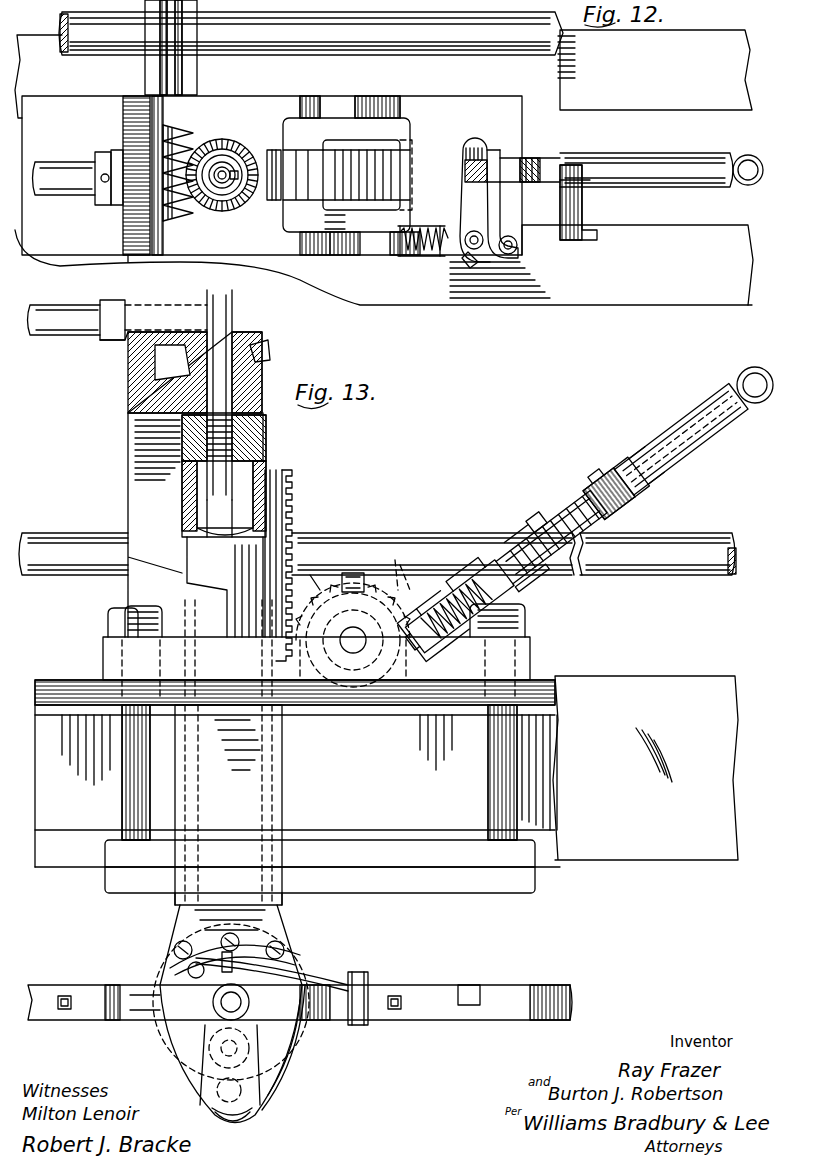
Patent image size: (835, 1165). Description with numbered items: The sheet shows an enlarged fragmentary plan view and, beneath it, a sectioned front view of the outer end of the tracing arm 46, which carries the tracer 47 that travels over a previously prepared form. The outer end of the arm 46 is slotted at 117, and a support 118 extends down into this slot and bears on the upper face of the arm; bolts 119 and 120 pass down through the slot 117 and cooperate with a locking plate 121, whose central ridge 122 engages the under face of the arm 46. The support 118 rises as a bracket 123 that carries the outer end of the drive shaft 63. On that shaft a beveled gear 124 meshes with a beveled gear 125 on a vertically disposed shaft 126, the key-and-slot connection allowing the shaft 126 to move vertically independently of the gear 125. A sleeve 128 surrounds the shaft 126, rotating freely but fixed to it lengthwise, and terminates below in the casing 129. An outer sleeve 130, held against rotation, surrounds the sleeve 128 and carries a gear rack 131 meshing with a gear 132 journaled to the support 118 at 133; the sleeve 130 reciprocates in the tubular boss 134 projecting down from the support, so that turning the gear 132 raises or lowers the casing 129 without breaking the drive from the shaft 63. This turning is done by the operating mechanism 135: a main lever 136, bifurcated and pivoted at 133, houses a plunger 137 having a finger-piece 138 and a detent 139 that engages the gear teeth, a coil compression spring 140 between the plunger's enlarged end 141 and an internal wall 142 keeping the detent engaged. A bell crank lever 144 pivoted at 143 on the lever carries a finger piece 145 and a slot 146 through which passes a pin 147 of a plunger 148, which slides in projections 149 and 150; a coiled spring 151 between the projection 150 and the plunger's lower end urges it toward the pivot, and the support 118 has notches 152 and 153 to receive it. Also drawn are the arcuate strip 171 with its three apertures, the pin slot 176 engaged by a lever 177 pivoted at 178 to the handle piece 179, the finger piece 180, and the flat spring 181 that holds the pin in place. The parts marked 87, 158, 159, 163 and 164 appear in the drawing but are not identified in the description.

In FIG. 12, the arm 46 is at (384, 277).
In FIG. 13, the arm 46 is at (650, 676).
In FIG. 13, the tracer 47 is at (293, 1071).
In FIG. 12, the shaft 63 is at (60, 192).
In FIG. 13, the shaft 63 is at (40, 333).
In FIG. 12, the horizontal shaft 87 is at (62, 20).
In FIG. 13, the horizontal shaft 87 is at (60, 576).
In FIG. 12, the slot 117 is at (676, 110).
In FIG. 13, the slot 117 is at (563, 682).
In FIG. 12, the support 118 is at (418, 96).
In FIG. 13, the support 118 is at (530, 645).
In FIG. 13, the bolt 119 is at (122, 795).
In FIG. 13, the bolt 120 is at (517, 800).
In FIG. 13, the locking plate 121 is at (402, 870).
In FIG. 13, the central ridge 122 is at (372, 860).
In FIG. 12, the bracket 123 is at (128, 245).
In FIG. 13, the bracket 123 is at (128, 426).
In FIG. 12, the beveled gear 124 is at (170, 140).
In FIG. 13, the beveled gear 124 is at (165, 352).
In FIG. 12, the beveled gear 125 is at (232, 150).
In FIG. 13, the beveled gear 125 is at (262, 352).
In FIG. 12, the vertically disposed shaft 126 is at (224, 170).
In FIG. 13, the vertically disposed shaft 126 is at (232, 478).
In FIG. 13, the sleeve 128 is at (182, 497).
In FIG. 13, the casing 129 is at (280, 920).
In FIG. 13, the sleeve 130 is at (284, 532).
In FIG. 12, the gear rack 131 is at (272, 150).
In FIG. 13, the gear rack 131 is at (312, 578).
In FIG. 12, the gear 132 is at (312, 158).
In FIG. 13, the gear 132 is at (356, 573).
In FIG. 12, the journal 133 is at (335, 220).
In FIG. 13, the journal 133 is at (350, 652).
In FIG. 13, the tubular boss 134 is at (283, 792).
In FIG. 12, the operating mechanism 135 is at (614, 195).
In FIG. 13, the operating mechanism 135 is at (599, 450).
In FIG. 12, the main lever 136 is at (645, 153).
In FIG. 13, the main lever 136 is at (682, 458).
In FIG. 13, the plunger 137 is at (632, 477).
In FIG. 12, the finger-piece 138 is at (747, 155).
In FIG. 13, the finger-piece 138 is at (752, 368).
In FIG. 13, the detent 139 is at (410, 569).
In FIG. 13, the coil compression spring 140 is at (618, 517).
In FIG. 13, the enlarged end 141 is at (420, 556).
In FIG. 13, the wall 142 is at (565, 469).
In FIG. 12, the pivot 143 is at (492, 118).
In FIG. 12, the bell crank lever 144 is at (490, 172).
In FIG. 13, the bell crank lever 144 is at (497, 514).
In FIG. 12, the finger piece 145 is at (590, 238).
In FIG. 13, the finger piece 145 is at (623, 490).
In FIG. 12, the slot 146 is at (482, 236).
In FIG. 12, the pin 147 is at (468, 258).
In FIG. 13, the pin 147 is at (478, 527).
In FIG. 12, the plunger 148 is at (515, 252).
In FIG. 13, the plunger 148 is at (492, 578).
In FIG. 12, the projection 149 is at (400, 258).
In FIG. 13, the projection 149 is at (428, 612).
In FIG. 12, the projection 150 is at (442, 226).
In FIG. 13, the projection 150 is at (502, 592).
In FIG. 12, the coiled spring 151 is at (430, 258).
In FIG. 13, the coiled spring 151 is at (443, 600).
In FIG. 13, the notch 152 is at (410, 652).
In FIG. 12, the notch 153 is at (345, 255).
In FIG. 13, the notch 153 is at (402, 545).
In FIG. 13, the bar 158 is at (150, 1022).
In FIG. 13, the collar 159 is at (305, 1025).
In FIG. 13, the tip 163 is at (236, 1120).
In FIG. 13, the stop 164 is at (214, 1112).
In FIG. 13, the arcuate strip 171 is at (205, 1040).
In FIG. 13, the slot 176 is at (290, 942).
In FIG. 13, the lever 177 is at (340, 975).
In FIG. 13, the pivot 178 is at (370, 978).
In FIG. 13, the handle piece 179 is at (545, 988).
In FIG. 13, the finger piece 180 is at (460, 1020).
In FIG. 13, the flat spring 181 is at (196, 940).